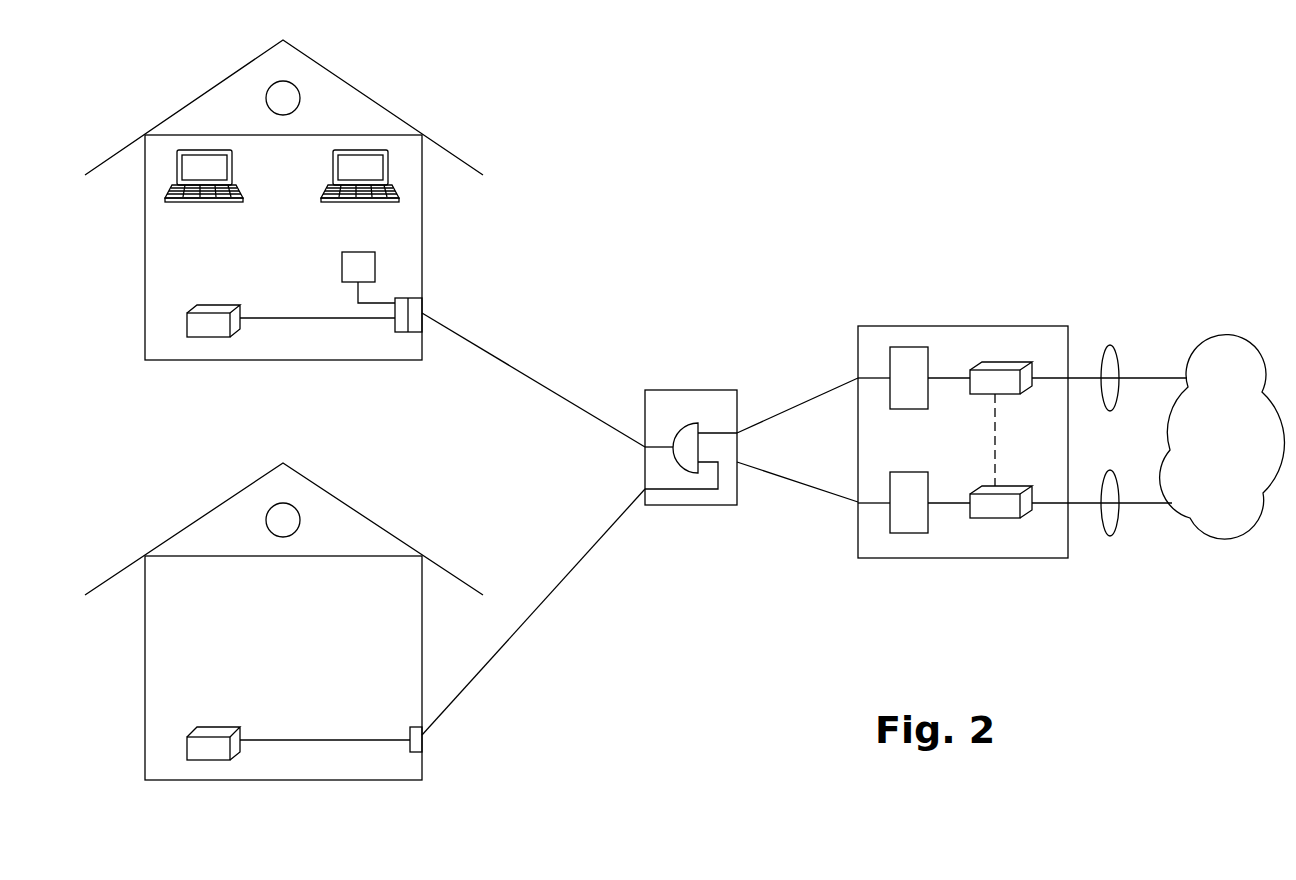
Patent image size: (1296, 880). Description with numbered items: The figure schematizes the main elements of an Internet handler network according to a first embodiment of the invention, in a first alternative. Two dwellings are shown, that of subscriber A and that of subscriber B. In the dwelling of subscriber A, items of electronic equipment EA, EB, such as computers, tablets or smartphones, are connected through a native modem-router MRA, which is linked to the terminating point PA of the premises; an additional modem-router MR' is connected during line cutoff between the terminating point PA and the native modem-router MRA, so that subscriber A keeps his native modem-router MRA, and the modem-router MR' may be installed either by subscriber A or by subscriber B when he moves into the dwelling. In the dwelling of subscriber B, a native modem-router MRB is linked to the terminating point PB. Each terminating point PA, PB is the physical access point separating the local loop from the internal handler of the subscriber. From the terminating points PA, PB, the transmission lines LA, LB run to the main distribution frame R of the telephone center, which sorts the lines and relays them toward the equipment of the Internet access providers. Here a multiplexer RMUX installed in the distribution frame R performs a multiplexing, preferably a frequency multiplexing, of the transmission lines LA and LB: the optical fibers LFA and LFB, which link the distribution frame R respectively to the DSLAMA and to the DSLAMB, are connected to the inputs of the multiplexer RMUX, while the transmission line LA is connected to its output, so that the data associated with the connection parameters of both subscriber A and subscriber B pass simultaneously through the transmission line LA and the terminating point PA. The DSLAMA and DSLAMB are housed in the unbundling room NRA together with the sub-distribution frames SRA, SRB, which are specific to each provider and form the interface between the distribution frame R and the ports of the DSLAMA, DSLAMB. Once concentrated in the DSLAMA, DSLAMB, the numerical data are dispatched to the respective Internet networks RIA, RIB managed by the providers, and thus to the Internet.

The subscriber A is at (283, 98).
The subscriber B is at (283, 520).
The item of electronic equipment EA is at (178, 202).
The item of electronic equipment EB is at (387, 202).
The native modem-router MRA is at (220, 305).
The modem-router MR' is at (414, 265).
The terminating point PA is at (420, 307).
The transmission line LA is at (517, 371).
The native modem-router MRB is at (220, 727).
The terminating point PB is at (420, 752).
The transmission line LB is at (508, 642).
The distribution frame R is at (710, 388).
The multiplexer RMUX is at (687, 425).
The optical fiber LFA is at (793, 407).
The optical fiber LFB is at (787, 481).
The access network node NRA is at (1048, 312).
The sub-distribution frame SRA is at (908, 353).
The sub-distribution frame SRB is at (907, 530).
The DSLAM DSLAMA is at (1000, 367).
The DSLAM DSLAMB is at (993, 512).
The Internet network RIA is at (1112, 347).
The Internet network RIB is at (1110, 536).
The element Internet is at (1222, 437).